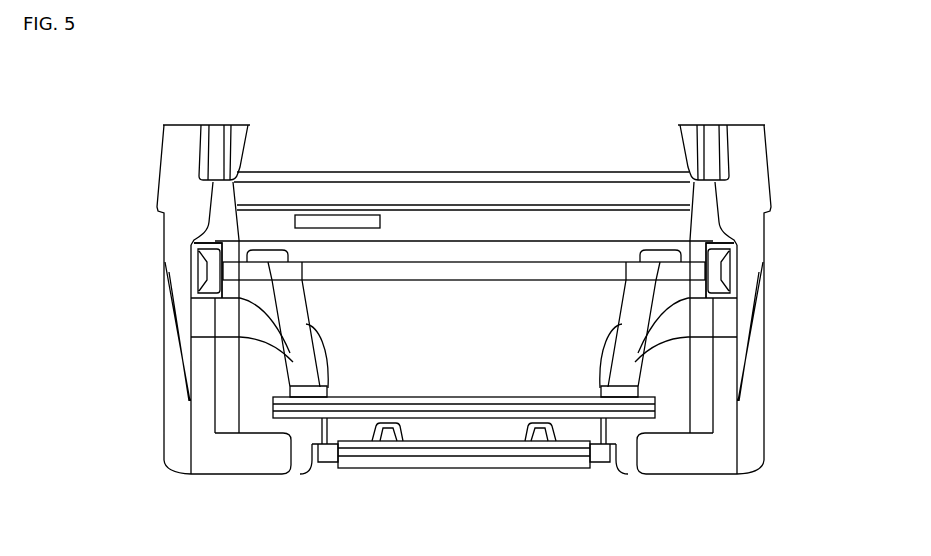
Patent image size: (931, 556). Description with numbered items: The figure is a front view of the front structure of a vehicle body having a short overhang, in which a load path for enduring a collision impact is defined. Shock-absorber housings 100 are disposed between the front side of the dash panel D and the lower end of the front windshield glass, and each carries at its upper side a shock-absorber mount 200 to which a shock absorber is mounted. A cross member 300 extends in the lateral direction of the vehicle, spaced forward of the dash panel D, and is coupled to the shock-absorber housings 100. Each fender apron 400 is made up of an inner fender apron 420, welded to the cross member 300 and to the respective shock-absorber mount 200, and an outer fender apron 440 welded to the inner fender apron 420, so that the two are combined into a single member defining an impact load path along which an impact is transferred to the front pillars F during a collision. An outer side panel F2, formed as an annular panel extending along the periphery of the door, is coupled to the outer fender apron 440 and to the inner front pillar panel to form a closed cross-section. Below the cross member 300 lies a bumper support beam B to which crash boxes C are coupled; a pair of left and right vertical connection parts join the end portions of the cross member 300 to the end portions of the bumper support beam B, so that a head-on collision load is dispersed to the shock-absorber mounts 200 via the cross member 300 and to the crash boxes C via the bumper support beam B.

The shock-absorber housing 100 is at (670, 303).
The shock-absorber mount 200 is at (660, 257).
The cross member 300 is at (431, 248).
The fender apron 400 is at (177, 280).
The inner fender apron 420 is at (223, 257).
The outer fender apron 440 is at (215, 267).
The front pillar F is at (788, 160).
The outer side panel F2 is at (747, 218).
The bumper support beam B is at (425, 403).
The dash panel D is at (498, 362).
The crash box C is at (646, 445).